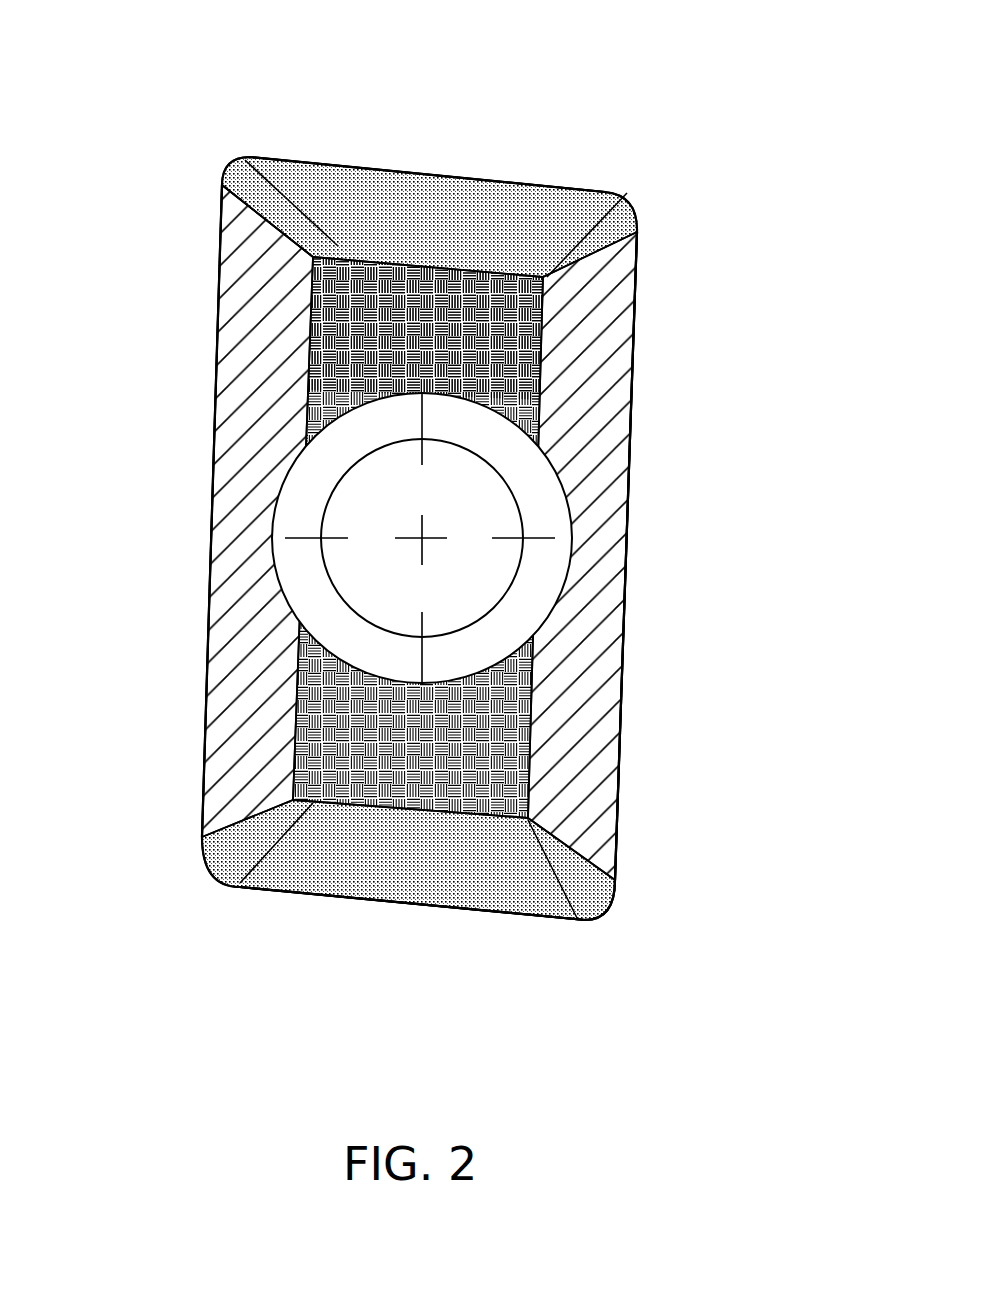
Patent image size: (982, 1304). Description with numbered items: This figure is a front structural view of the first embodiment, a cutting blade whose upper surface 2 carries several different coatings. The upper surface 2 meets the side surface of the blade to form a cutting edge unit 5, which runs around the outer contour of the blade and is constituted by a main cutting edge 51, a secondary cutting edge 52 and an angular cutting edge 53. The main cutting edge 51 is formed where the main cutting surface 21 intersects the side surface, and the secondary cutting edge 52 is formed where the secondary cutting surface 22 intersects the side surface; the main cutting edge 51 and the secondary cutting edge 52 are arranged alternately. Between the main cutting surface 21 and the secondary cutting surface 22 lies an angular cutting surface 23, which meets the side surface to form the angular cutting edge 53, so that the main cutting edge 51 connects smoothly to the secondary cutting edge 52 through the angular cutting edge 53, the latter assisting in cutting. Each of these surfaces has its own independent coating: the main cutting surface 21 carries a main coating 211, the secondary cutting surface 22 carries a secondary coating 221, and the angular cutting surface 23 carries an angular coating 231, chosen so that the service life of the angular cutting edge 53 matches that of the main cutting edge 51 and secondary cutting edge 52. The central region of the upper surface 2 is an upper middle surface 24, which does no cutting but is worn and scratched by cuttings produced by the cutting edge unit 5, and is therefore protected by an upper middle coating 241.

The upper surface 2 is at (600, 360).
The main cutting surface 21 is at (250, 490).
The main coating 211 is at (257, 680).
The secondary cutting surface 22 is at (347, 188).
The secondary coating 221 is at (413, 188).
The angular cutting surface 23 is at (230, 182).
The angular coating 231 is at (270, 206).
The upper middle surface 24 is at (410, 748).
The upper middle coating 241 is at (513, 290).
The cutting edge unit 5 is at (793, 877).
The main cutting edge 51 is at (620, 803).
The secondary cutting edge 52 is at (553, 920).
The angular cutting edge 53 is at (617, 900).